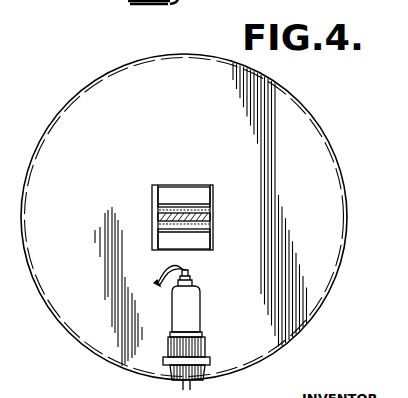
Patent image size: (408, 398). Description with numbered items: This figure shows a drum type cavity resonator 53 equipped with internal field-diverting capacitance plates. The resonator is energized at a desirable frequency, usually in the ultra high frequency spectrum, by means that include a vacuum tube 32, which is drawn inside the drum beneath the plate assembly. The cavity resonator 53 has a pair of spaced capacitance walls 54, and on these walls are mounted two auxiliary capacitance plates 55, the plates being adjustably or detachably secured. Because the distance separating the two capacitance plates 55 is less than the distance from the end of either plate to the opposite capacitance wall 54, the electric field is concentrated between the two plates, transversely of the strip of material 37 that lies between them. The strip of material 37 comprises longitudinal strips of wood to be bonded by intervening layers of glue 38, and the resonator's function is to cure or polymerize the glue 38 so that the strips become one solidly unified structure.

The vacuum tube 32 is at (193, 312).
The strip of material 37 is at (212, 218).
The layer of glue 38 is at (183, 214).
The cavity resonator 53 is at (312, 183).
The capacitance wall 54 is at (312, 152).
The auxiliary capacitance plate 55 is at (208, 196).